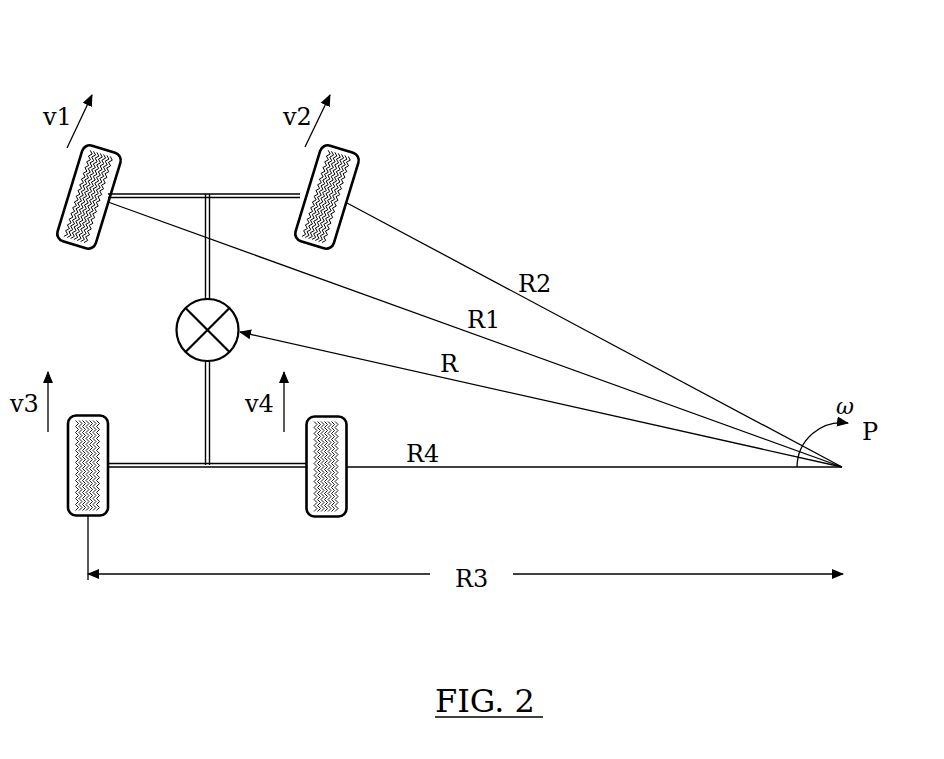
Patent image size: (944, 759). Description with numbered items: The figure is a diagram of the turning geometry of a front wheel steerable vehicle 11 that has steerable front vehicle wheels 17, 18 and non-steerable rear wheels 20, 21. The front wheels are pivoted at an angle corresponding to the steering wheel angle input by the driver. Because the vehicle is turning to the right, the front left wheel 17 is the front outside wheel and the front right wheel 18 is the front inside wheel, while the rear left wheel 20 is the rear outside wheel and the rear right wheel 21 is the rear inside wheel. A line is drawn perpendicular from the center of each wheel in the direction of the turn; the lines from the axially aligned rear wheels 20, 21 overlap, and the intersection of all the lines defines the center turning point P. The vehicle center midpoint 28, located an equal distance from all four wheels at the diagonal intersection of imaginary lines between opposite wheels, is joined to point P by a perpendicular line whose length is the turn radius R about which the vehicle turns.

The vehicle 11 is at (233, 267).
The front left wheel 17 is at (110, 152).
The front right wheel 18 is at (348, 150).
The rear left wheel 20 is at (88, 415).
The rear right wheel 21 is at (327, 417).
The vehicle center midpoint 28 is at (176, 332).